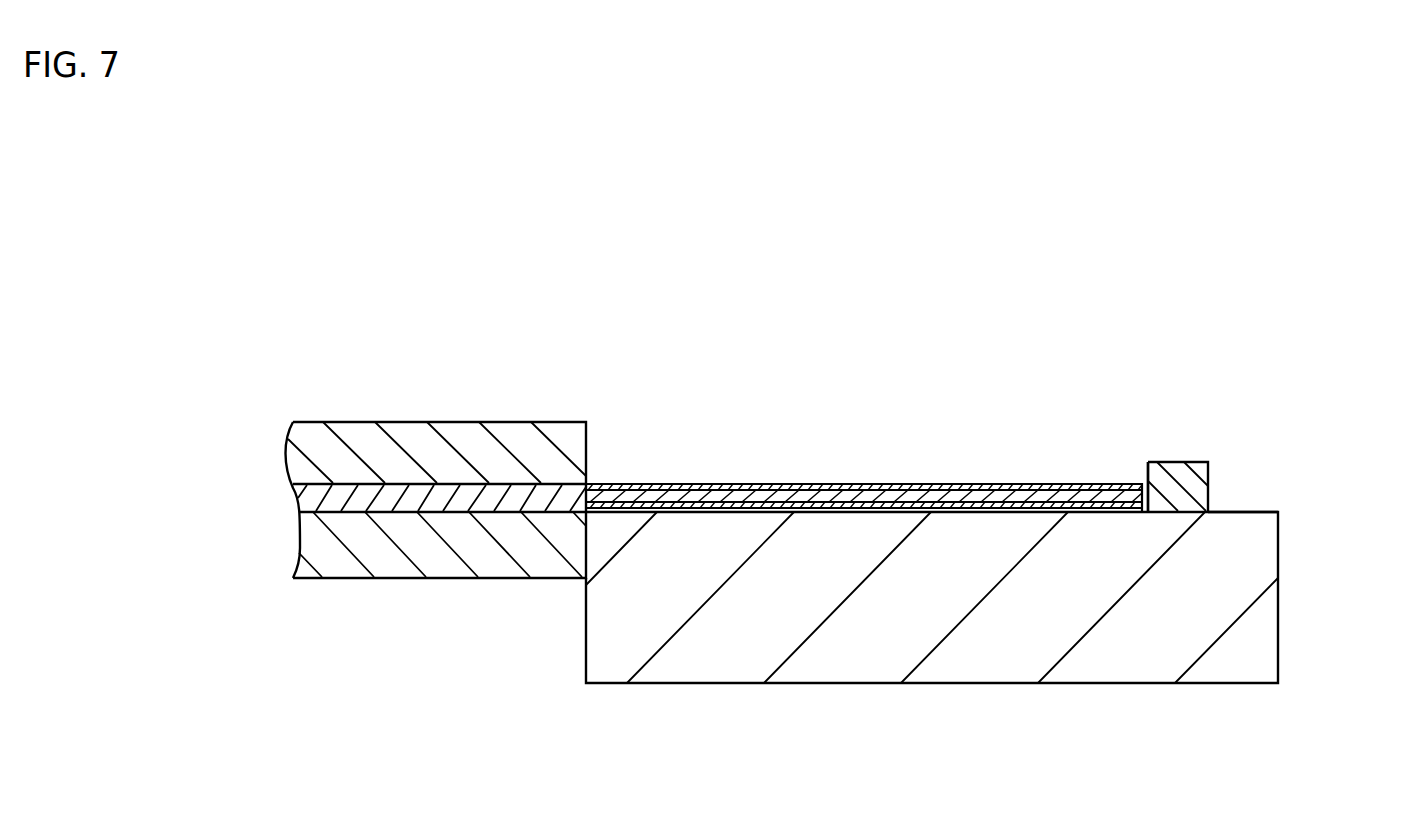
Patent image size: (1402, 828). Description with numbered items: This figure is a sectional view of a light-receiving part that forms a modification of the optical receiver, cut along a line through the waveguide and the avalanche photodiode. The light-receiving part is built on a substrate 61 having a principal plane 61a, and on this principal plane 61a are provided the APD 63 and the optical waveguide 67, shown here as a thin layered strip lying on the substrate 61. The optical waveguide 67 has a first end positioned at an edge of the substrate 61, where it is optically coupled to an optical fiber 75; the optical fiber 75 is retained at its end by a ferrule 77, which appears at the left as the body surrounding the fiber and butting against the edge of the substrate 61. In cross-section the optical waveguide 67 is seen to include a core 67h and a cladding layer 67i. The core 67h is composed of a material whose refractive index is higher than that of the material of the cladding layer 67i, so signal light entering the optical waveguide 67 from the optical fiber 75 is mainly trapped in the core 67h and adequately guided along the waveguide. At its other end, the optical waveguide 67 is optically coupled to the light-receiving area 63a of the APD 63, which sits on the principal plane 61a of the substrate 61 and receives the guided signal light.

The ferrule 77 is at (380, 448).
The optical fiber 75 is at (460, 497).
The optical waveguide 67 is at (864, 429).
The core 67h is at (806, 484).
The cladding layer 67i is at (877, 493).
The APD 63 is at (1209, 475).
The light-receiving area 63a is at (1142, 482).
The substrate 61 is at (1278, 575).
The principal plane 61a is at (1250, 511).